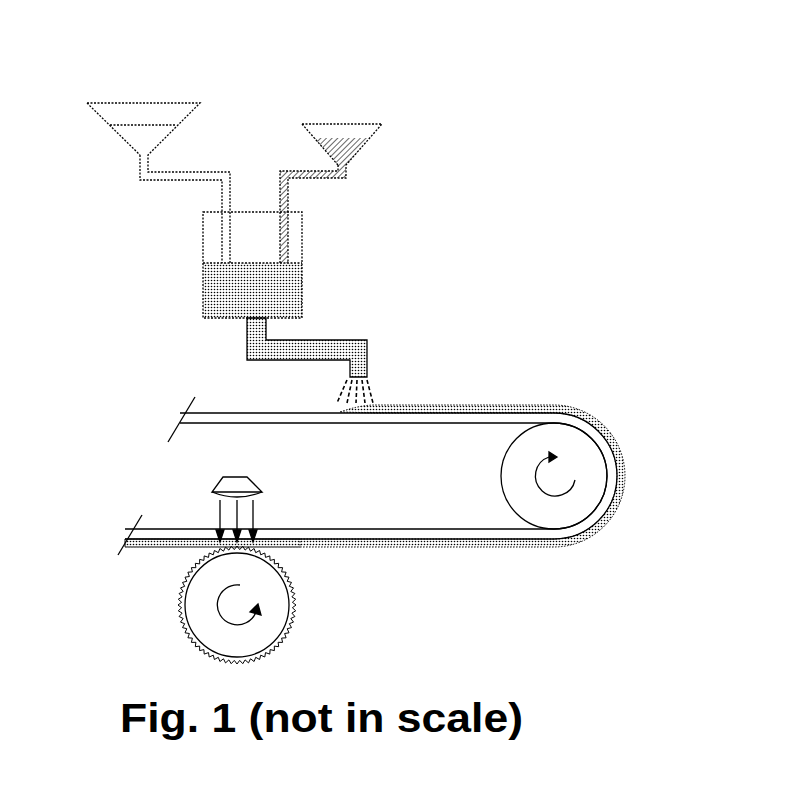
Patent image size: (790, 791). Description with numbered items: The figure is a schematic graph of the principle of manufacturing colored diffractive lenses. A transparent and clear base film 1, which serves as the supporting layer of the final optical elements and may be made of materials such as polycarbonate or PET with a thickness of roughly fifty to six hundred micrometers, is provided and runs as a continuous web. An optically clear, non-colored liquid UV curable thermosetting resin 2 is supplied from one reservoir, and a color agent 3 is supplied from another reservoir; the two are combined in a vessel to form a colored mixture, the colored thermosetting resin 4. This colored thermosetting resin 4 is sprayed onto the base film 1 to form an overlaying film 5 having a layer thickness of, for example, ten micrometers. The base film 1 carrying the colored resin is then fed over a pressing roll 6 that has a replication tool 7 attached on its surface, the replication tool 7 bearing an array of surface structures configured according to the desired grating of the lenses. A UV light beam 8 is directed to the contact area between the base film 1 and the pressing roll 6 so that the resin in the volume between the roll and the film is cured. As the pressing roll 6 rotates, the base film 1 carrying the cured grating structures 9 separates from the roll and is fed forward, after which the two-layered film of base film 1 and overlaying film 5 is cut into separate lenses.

The base film 1 is at (232, 420).
The thermosetting resin 2 is at (143, 138).
The color agent 3 is at (350, 150).
The colored thermosetting resin 4 is at (290, 290).
The overlaying film 5 is at (165, 545).
The pressing roll 6 is at (302, 594).
The replication tool 7 is at (295, 622).
The UV light beam 8 is at (261, 511).
The cured grating structures 9 is at (138, 545).